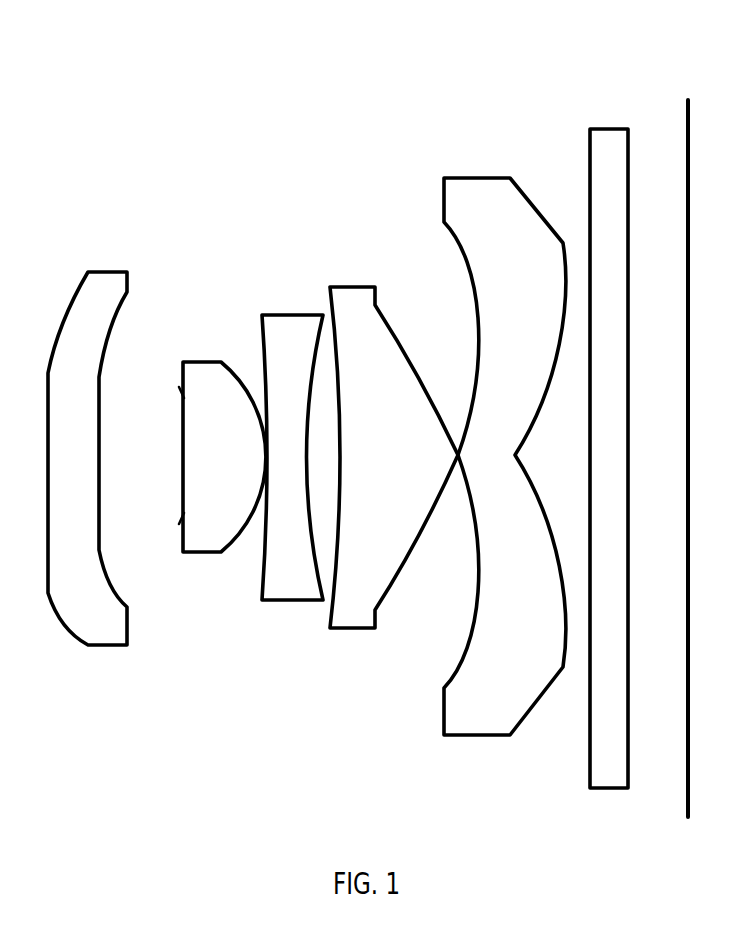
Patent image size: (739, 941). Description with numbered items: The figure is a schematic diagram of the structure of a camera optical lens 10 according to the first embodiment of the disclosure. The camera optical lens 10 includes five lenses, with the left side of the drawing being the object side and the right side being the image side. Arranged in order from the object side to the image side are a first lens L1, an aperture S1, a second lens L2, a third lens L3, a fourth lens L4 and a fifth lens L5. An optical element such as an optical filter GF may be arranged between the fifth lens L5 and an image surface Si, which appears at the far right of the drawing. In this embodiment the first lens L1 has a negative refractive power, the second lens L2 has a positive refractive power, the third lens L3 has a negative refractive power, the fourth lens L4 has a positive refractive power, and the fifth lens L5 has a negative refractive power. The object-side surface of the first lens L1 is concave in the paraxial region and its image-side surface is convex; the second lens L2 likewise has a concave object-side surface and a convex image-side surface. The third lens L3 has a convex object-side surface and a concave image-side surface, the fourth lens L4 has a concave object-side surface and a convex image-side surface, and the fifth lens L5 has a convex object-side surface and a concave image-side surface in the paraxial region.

The camera optical lens 10 is at (388, 38).
The first lens L1 is at (87, 445).
The second lens L2 is at (224, 445).
The aperture S1 is at (171, 445).
The third lens L3 is at (292, 444).
The fourth lens L4 is at (394, 444).
The fifth lens L5 is at (505, 443).
The optical filter GF is at (609, 445).
The image surface Si is at (688, 446).